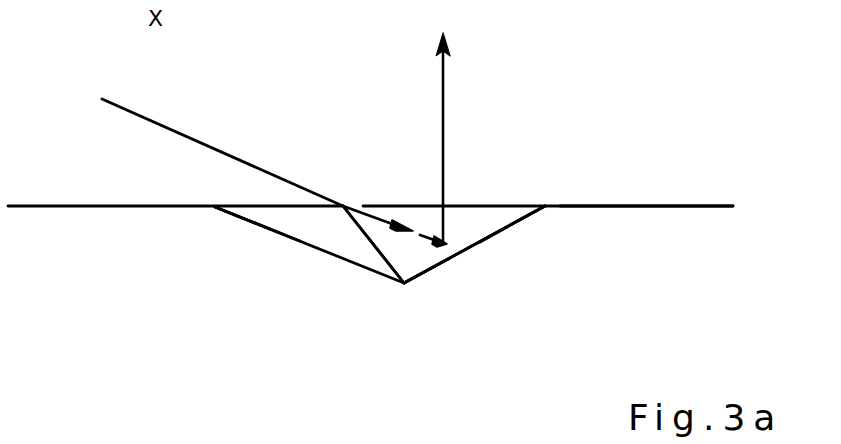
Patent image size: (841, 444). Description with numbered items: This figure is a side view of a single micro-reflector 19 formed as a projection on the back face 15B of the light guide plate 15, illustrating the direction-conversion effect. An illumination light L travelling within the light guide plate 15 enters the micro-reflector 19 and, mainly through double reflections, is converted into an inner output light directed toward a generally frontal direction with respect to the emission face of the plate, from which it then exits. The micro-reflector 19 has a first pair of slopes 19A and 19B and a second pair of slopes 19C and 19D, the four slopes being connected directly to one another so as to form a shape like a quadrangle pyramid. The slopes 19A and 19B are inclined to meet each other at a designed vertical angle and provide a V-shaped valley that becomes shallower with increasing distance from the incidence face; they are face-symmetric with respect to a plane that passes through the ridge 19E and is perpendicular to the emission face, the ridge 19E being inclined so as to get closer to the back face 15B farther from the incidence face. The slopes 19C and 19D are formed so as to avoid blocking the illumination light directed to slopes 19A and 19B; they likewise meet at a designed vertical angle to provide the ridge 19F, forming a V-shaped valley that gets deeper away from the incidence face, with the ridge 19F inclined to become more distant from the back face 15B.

The light guide plate 15 is at (370, 241).
The back face 15B is at (646, 249).
The micro-reflector 19 is at (371, 267).
The slope 19A is at (474, 274).
The slope 19B is at (512, 174).
The slope 19C is at (354, 284).
The slope 19D is at (232, 201).
The ridge 19E is at (452, 319).
The ridge 19F is at (206, 252).
The illumination light L is at (274, 163).